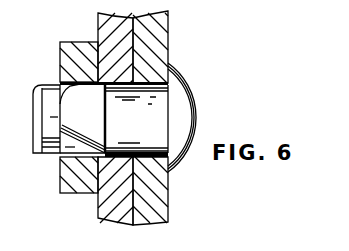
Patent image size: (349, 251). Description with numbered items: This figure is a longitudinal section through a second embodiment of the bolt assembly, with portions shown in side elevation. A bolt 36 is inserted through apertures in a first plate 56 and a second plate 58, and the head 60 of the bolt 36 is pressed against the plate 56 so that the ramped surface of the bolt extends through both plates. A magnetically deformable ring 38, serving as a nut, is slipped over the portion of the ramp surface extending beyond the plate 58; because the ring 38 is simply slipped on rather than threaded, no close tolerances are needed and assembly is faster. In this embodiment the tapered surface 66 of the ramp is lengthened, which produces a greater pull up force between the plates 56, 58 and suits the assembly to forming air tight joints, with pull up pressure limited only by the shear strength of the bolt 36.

The bolt 36 is at (142, 129).
The magnetically deformable ring 38 is at (88, 72).
The first plate 56 is at (160, 61).
The second plate 58 is at (123, 61).
The head 60 is at (197, 108).
The tapered surface 66 is at (82, 118).